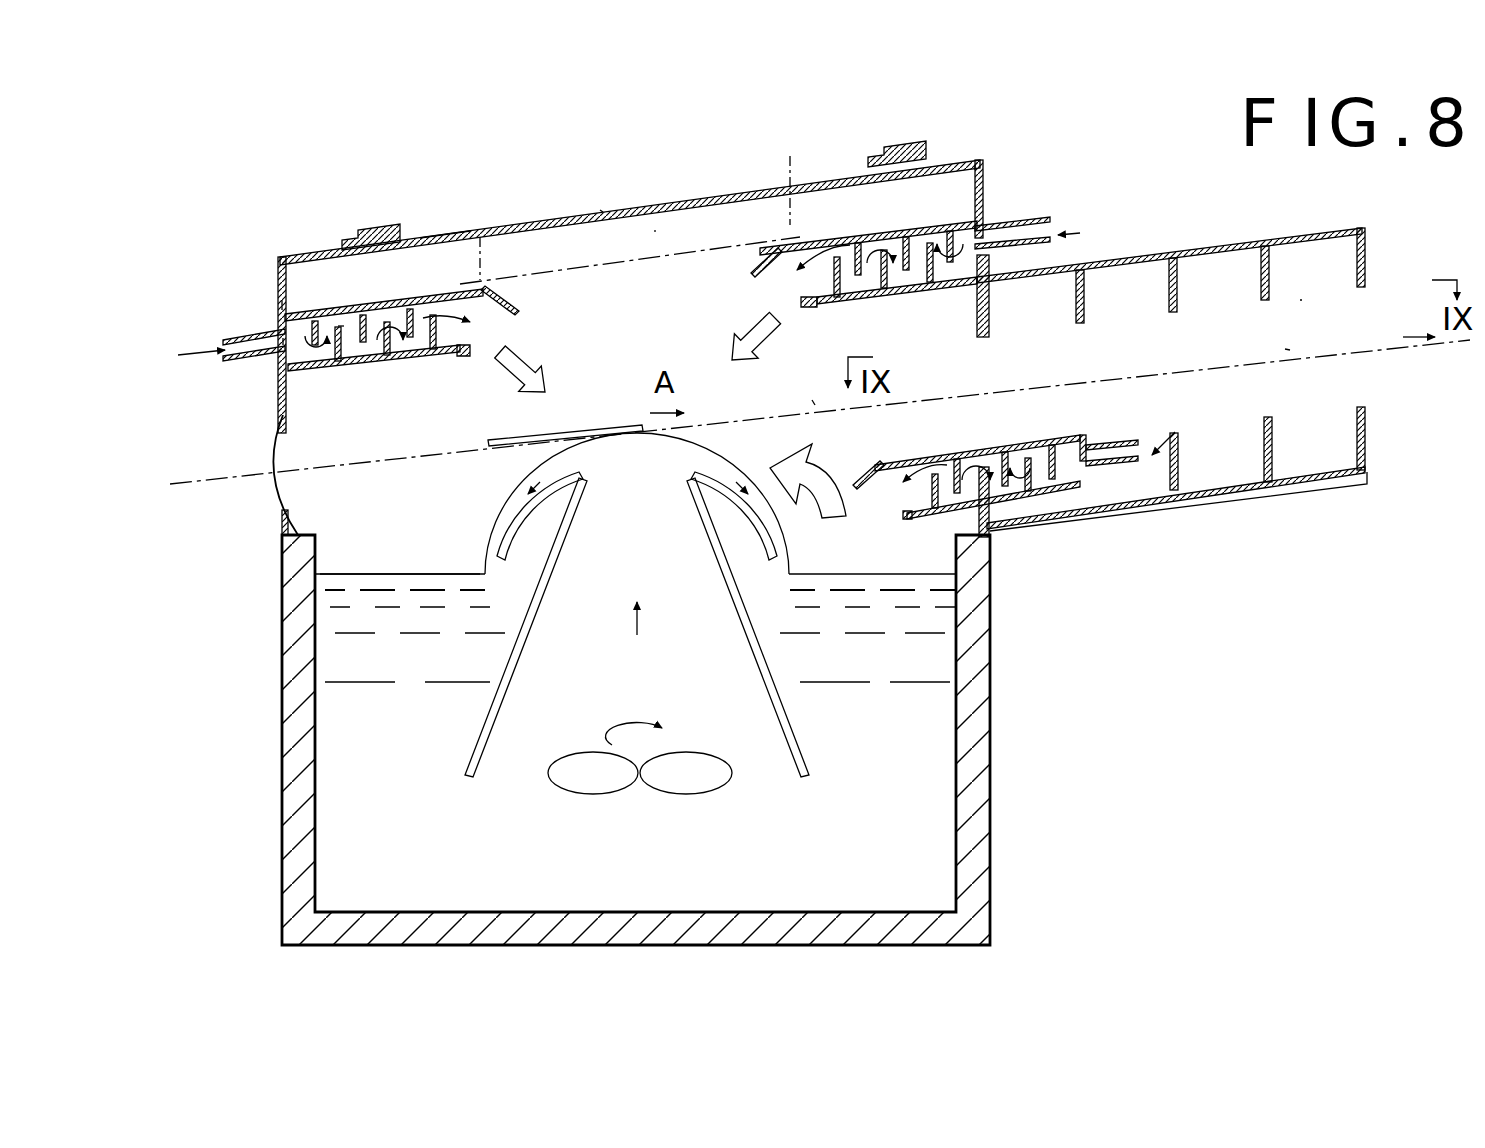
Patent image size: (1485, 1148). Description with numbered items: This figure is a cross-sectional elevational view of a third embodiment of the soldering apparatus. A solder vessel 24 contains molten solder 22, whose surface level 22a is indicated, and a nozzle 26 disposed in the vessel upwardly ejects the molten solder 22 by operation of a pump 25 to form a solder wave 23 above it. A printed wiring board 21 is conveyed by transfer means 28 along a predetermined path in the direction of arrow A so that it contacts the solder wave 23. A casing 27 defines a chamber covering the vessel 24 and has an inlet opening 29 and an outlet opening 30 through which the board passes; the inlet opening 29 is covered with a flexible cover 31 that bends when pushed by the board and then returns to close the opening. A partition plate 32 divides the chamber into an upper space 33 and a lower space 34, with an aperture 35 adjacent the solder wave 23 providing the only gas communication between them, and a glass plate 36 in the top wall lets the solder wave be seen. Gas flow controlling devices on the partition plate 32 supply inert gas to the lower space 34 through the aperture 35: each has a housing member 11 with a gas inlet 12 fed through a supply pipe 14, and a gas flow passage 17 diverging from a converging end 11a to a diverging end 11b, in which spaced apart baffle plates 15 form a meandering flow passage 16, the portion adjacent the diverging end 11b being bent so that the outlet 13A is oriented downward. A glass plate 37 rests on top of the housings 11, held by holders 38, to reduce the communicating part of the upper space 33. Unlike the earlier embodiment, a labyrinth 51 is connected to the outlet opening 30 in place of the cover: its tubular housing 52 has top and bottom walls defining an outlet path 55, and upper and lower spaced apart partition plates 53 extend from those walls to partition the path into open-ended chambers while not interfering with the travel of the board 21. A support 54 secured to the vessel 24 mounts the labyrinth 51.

The housing member 11 is at (388, 310).
The converging end 11a is at (278, 352).
The diverging end 11b is at (463, 356).
The gas inlet 12 is at (288, 330).
The outlet 13A is at (687, 431).
The air supply pipe 14 is at (232, 338).
The baffle plates 15 is at (320, 320).
The meandering flow passage 16 is at (405, 300).
The gas flow passage 17 is at (500, 292).
The printed wiring board 21 is at (590, 432).
The molten solder 22 is at (935, 696).
The surface level 22a is at (407, 573).
The solder wave 23 is at (712, 466).
The solder vessel 24 is at (985, 790).
The pump 25 is at (676, 778).
The nozzle 26 is at (590, 495).
The casing 27 is at (985, 176).
The transfer means 28 is at (1360, 353).
The inlet opening 29 is at (282, 448).
The outlet opening 30 is at (1330, 306).
The flexible cover 31 is at (277, 500).
The partition plate 32 is at (405, 372).
The upper space 33 is at (703, 222).
The lower space 34 is at (812, 398).
The aperture 35 is at (628, 330).
The glass plate 36 is at (450, 230).
The glass plate 37 is at (657, 250).
The holders 38 is at (480, 237).
The labyrinth 51 is at (1372, 198).
The tubular housing 52 is at (1250, 240).
The partition plates 53 is at (1180, 290).
The support 54 is at (1070, 532).
The outlet path 55 is at (1283, 348).